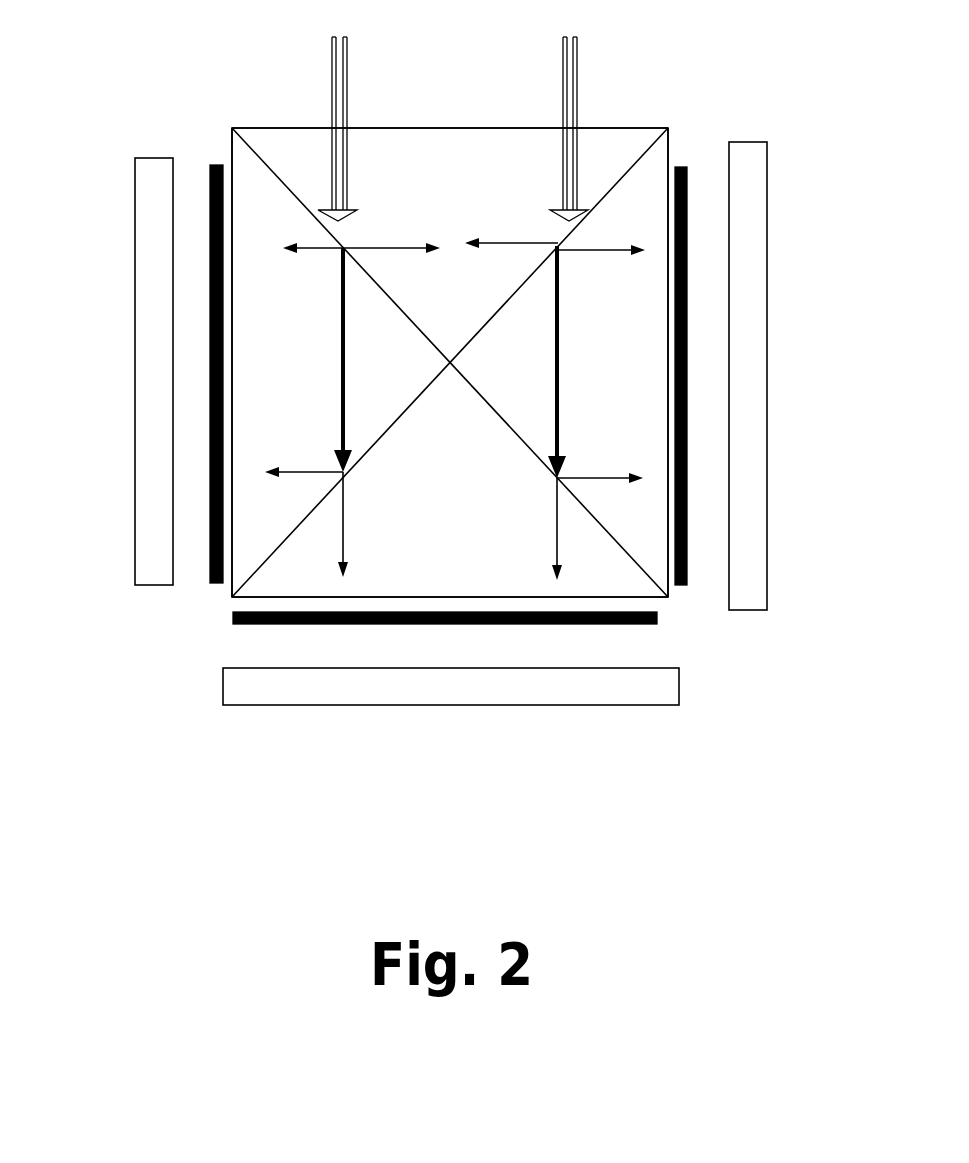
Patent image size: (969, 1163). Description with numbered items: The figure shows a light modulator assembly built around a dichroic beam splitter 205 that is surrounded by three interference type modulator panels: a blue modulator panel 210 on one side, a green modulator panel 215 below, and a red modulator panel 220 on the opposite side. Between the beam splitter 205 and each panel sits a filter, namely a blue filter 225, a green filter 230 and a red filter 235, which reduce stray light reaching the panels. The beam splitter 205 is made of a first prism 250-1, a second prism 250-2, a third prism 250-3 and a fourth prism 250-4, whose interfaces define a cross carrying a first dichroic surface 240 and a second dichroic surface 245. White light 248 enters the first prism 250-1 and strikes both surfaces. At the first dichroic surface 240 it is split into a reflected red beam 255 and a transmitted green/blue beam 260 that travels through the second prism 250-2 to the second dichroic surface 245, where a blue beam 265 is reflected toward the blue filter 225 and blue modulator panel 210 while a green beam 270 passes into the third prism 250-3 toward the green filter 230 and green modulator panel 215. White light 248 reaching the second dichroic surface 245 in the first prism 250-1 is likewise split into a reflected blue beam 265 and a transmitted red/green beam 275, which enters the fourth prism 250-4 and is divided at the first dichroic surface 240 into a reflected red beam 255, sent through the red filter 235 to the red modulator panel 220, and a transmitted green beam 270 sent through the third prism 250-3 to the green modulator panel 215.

The dichroic beam splitter 205 is at (226, 118).
The blue modulator panel 210 is at (135, 373).
The green modulator panel 215 is at (461, 705).
The red modulator panel 220 is at (767, 355).
The blue filter 225 is at (211, 563).
The green filter 230 is at (658, 617).
The red filter 235 is at (681, 160).
The first dichroic surface 240 is at (270, 160).
The second dichroic surface 245 is at (612, 170).
The white light 248 is at (345, 185).
The first prism 250-1 is at (450, 143).
The second prism 250-2 is at (322, 362).
The third prism 250-3 is at (450, 495).
The fourth prism 250-4 is at (573, 362).
The red beam 255 is at (380, 247).
The green/blue beam 260 is at (342, 382).
The blue beam 265 is at (522, 242).
The green beam 270 is at (344, 500).
The red/green beam 275 is at (558, 355).